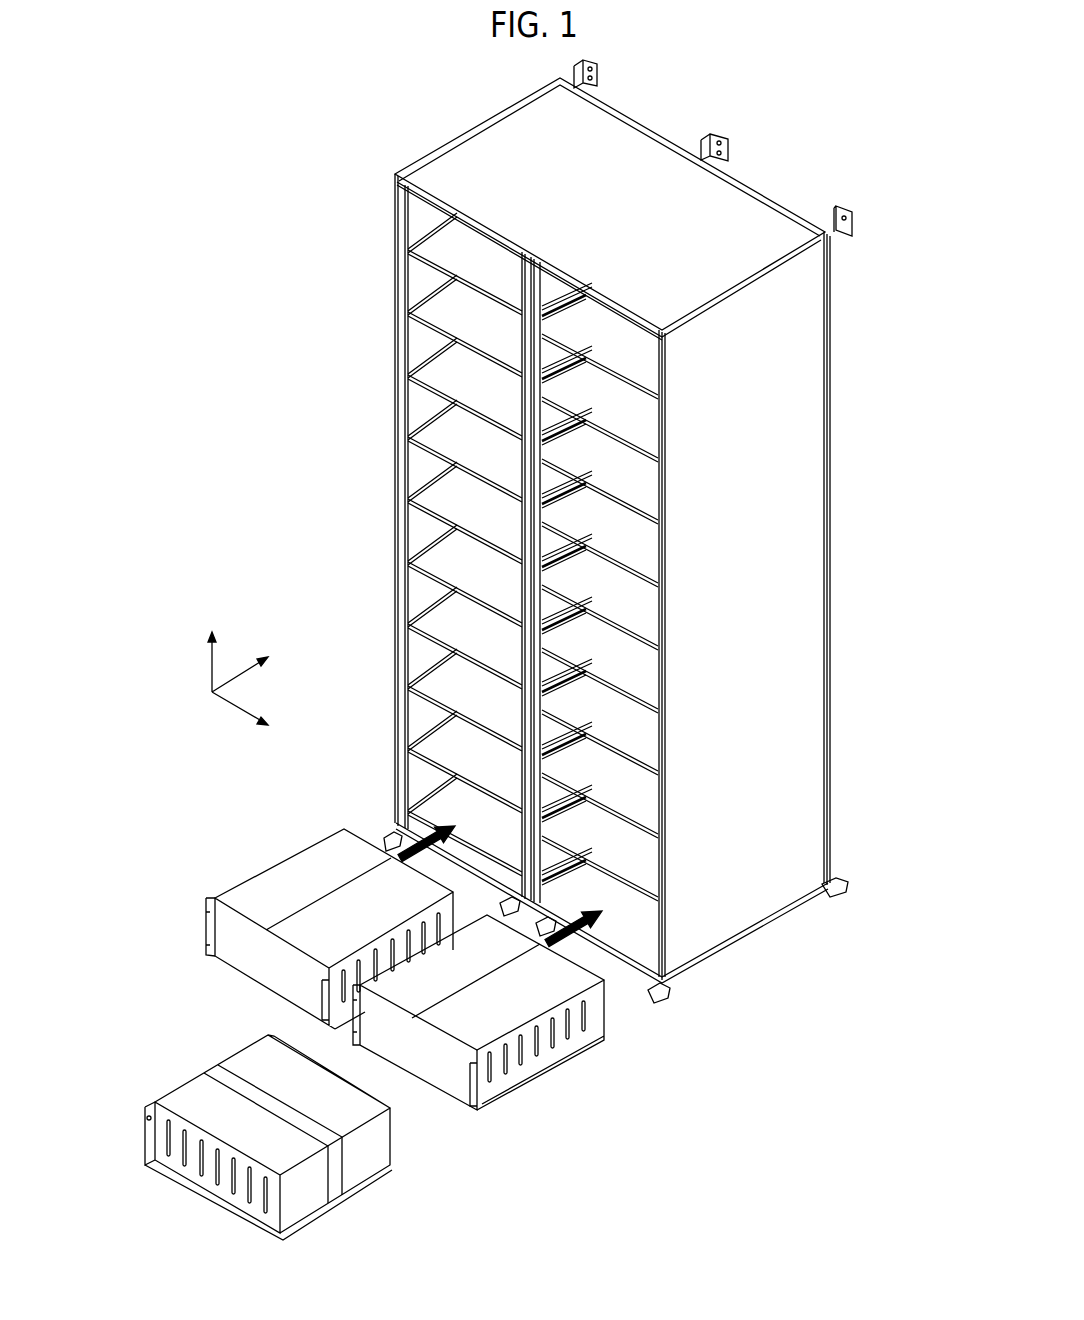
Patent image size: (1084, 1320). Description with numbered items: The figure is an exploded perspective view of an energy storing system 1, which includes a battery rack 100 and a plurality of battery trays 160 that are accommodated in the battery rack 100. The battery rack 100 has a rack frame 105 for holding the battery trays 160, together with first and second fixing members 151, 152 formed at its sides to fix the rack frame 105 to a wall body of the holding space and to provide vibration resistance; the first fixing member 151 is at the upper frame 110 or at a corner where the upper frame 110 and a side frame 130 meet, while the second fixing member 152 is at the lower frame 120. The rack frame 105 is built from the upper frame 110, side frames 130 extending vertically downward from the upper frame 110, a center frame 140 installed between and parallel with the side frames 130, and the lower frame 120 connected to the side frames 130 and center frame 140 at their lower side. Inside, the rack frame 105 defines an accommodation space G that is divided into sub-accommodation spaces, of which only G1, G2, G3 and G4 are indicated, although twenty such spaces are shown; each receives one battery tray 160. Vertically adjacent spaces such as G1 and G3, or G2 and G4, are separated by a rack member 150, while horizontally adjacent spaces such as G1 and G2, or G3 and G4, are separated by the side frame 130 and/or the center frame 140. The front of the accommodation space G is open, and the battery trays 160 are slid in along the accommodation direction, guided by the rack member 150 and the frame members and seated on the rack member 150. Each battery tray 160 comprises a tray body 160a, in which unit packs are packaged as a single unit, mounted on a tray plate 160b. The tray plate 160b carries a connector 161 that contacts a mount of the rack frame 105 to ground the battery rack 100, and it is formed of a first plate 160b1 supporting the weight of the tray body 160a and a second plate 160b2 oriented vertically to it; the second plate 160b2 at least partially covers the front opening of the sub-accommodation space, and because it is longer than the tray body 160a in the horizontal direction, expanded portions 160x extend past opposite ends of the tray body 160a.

The energy storing system 1 is at (330, 92).
The battery rack 100 is at (438, 102).
The rack frame 105 is at (845, 505).
The upper frame 110 is at (738, 215).
The lower frame 120 is at (728, 950).
The side frame 130 is at (395, 345).
The center frame 140 is at (522, 297).
The rack member 150 is at (457, 452).
The first fixing member 151 is at (592, 58).
The second fixing member 152 is at (660, 993).
The battery tray 160 is at (155, 1036).
The tray body 160a is at (553, 992).
The tray plate 160b is at (660, 1096).
The first plate 160b1 is at (550, 1073).
The second plate 160b2 is at (447, 1075).
The expanded portion 160x is at (145, 1165).
The connector 161 is at (143, 1119).
The accommodation space G is at (440, 552).
The sub-accommodation space G1 is at (430, 222).
The sub-accommodation space G2 is at (645, 356).
The sub-accommodation space G3 is at (432, 284).
The sub-accommodation space G4 is at (645, 412).